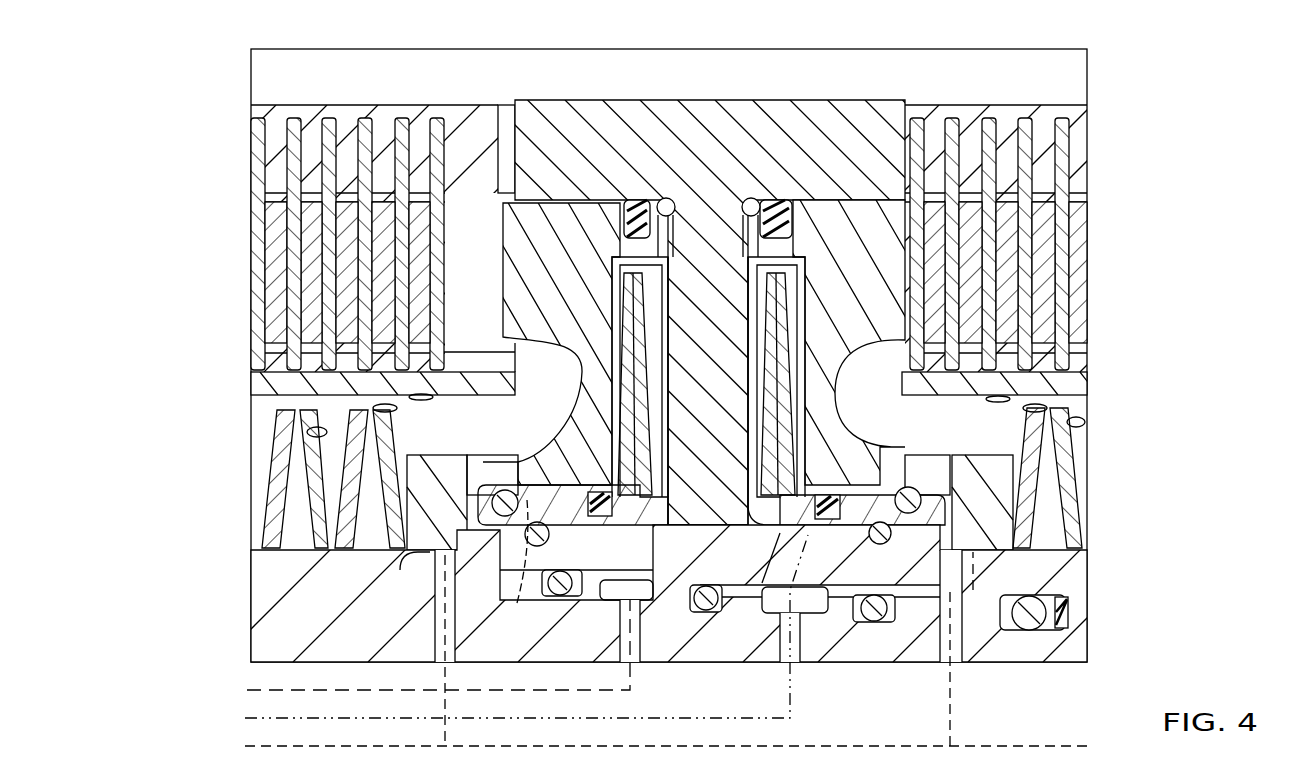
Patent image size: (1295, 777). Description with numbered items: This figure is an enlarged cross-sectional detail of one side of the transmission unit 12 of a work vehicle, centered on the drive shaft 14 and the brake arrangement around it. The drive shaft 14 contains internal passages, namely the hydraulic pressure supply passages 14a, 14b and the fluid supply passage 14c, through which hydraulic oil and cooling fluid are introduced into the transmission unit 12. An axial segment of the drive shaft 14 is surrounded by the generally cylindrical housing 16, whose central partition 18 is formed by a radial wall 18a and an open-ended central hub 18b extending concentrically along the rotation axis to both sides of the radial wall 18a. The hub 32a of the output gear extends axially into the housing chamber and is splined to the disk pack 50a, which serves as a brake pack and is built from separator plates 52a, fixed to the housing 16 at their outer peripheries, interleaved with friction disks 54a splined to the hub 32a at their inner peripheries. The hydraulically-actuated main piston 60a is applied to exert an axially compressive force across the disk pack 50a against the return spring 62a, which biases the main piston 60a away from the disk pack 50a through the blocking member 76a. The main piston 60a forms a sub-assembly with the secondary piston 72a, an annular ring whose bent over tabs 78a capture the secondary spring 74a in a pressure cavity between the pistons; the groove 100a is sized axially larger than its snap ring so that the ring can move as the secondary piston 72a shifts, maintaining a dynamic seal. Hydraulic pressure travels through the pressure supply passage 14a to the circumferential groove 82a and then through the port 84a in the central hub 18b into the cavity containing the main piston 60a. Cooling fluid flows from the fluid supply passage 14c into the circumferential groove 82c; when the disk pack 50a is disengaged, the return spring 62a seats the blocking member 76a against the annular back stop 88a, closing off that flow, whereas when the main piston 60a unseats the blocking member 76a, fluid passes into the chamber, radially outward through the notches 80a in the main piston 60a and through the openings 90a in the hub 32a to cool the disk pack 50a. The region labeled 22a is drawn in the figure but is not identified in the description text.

The transmission unit 12 is at (215, 183).
The drive shaft 14 is at (412, 655).
The hydraulic pressure supply passage 14a is at (247, 690).
The hydraulic pressure supply passage 14b is at (247, 718).
The fluid supply passage 14c is at (247, 746).
The housing 16 is at (887, 58).
The central partition 18 is at (670, 110).
The radial wall 18a is at (715, 225).
The central hub 18b is at (1080, 582).
The flow passage 22a is at (535, 357).
The hub 32a is at (272, 380).
The disk pack 50a is at (268, 275).
The separator plate 52a is at (297, 130).
The friction disk 54a is at (345, 215).
The main piston 60a is at (592, 215).
The return spring 62a is at (275, 505).
The secondary piston 72a is at (640, 512).
The secondary spring 74a is at (635, 295).
The blocking member 76a is at (447, 468).
The bent over tab 78a is at (665, 462).
The notch 80a is at (485, 460).
The circumferential groove 82a is at (645, 590).
The circumferential groove 82c is at (420, 560).
The port 84a is at (700, 549).
The annular back stop 88a is at (477, 550).
The opening 90a is at (300, 426).
The groove 100a is at (525, 522).